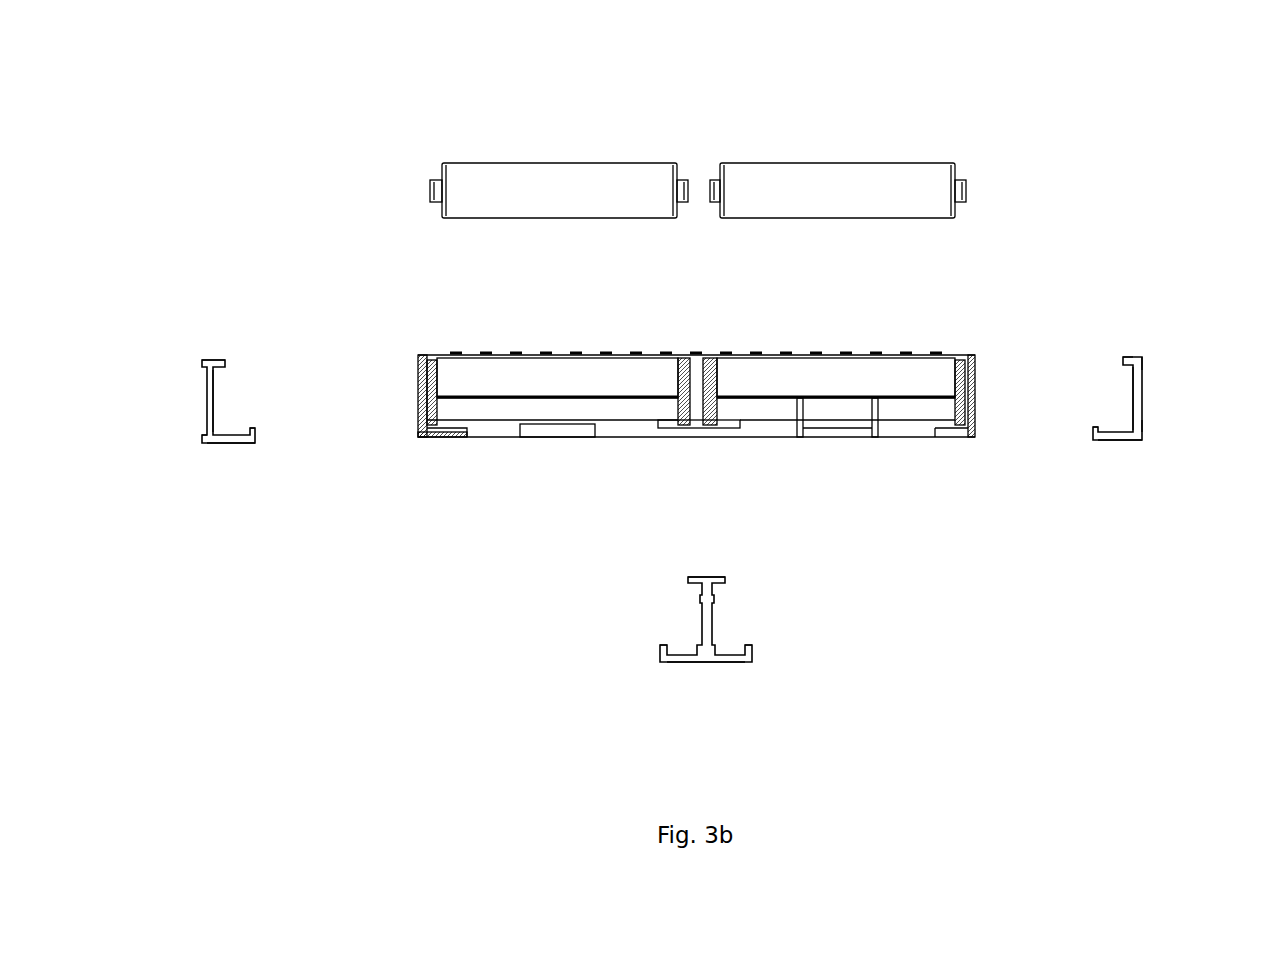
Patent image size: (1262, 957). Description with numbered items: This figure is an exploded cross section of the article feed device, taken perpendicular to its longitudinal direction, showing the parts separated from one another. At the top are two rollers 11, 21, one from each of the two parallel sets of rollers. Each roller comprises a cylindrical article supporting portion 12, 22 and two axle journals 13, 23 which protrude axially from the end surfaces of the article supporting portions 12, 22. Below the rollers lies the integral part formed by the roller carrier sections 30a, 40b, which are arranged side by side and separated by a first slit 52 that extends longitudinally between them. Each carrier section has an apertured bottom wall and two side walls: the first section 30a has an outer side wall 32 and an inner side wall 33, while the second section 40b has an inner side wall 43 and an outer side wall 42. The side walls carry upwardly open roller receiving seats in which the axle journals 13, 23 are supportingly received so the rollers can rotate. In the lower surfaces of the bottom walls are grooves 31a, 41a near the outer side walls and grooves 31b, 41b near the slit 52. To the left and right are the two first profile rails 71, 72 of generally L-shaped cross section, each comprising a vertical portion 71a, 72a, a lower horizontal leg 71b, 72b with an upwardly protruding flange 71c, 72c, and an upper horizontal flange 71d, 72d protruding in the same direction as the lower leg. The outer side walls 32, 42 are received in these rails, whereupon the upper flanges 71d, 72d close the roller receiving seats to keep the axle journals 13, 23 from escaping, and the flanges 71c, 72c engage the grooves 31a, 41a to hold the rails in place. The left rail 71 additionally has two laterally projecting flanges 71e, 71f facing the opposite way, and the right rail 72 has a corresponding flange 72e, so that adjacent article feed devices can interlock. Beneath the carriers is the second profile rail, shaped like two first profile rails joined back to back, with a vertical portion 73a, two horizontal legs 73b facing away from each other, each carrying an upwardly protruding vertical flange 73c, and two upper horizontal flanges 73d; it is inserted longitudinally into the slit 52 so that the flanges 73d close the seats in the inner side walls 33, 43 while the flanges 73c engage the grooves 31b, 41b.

The roller 11 is at (522, 149).
The cylindrical article supporting portion 12 is at (590, 163).
The axle journal 13 is at (430, 191).
The roller 21 is at (861, 184).
The cylindrical article supporting portion 22 is at (880, 163).
The axle journal 23 is at (966, 191).
The section of roller carrier 30a is at (653, 410).
The groove 31a is at (466, 436).
The groove 31b is at (652, 422).
The side wall 32 is at (418, 360).
The side wall 33 is at (686, 395).
The section of roller carrier 40b is at (882, 432).
The groove 41a is at (936, 432).
The groove 41b is at (740, 422).
The side wall 42 is at (975, 375).
The side wall 43 is at (703, 396).
The first slit 52 is at (697, 378).
The first profile rail 71 is at (228, 419).
The vertical portion 71a is at (214, 390).
The lower horizontal leg 71b is at (230, 444).
The upwardly protruding flange 71c is at (256, 431).
The upper horizontal flange 71d is at (226, 364).
The laterally projecting flange 71e is at (203, 437).
The laterally projecting flange 71f is at (202, 365).
The first profile rail 72 is at (1117, 408).
The vertical portion 72a is at (1132, 392).
The lower horizontal leg 72b is at (1116, 442).
The upwardly protruding flange 72c is at (1092, 430).
The upper horizontal flange 72d is at (1125, 357).
The laterally projecting flange 72e is at (1143, 368).
The vertical portion 73a is at (712, 618).
The horizontal leg 73b is at (681, 663).
The upwardly protruding vertical flange 73c is at (660, 645).
The upper horizontal flange 73d is at (688, 580).